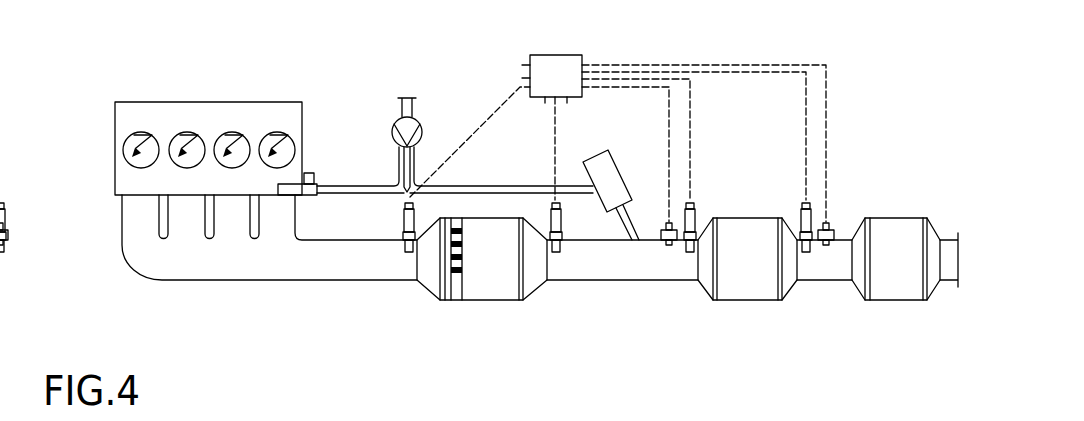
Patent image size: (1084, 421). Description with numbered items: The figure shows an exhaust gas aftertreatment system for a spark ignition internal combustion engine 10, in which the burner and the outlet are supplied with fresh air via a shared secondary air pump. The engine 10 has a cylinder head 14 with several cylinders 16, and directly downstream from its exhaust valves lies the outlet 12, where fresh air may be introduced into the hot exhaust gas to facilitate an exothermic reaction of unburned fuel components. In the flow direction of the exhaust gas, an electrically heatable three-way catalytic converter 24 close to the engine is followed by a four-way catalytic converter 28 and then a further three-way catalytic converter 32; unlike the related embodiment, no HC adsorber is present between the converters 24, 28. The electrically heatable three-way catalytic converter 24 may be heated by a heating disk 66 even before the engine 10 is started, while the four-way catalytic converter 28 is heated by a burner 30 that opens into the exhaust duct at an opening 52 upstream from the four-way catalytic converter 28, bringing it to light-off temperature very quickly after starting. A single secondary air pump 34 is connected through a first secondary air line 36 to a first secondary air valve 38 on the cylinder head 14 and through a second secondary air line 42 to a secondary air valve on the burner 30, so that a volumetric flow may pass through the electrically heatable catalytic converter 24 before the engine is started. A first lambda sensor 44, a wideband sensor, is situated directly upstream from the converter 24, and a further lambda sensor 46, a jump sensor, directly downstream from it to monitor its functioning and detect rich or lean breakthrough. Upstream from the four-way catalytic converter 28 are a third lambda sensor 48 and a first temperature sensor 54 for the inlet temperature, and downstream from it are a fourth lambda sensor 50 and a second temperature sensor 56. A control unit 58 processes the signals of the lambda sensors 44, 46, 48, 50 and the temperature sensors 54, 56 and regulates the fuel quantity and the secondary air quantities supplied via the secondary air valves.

The internal combustion engine 10 is at (182, 118).
The outlet 12 is at (151, 253).
The cylinder head 14 is at (125, 180).
The cylinders 16 is at (141, 122).
The electrically heatable three-way catalytic converter 24 is at (482, 284).
The four-way catalytic converter 28 is at (750, 289).
The burner 30 is at (615, 225).
The further three-way catalytic converter 32 is at (896, 289).
The secondary air pump 34 is at (395, 127).
The first secondary air line 36 is at (360, 189).
The first secondary air valve 38 is at (309, 197).
The second secondary air line 42 is at (504, 189).
The first lambda sensor 44 is at (405, 212).
The further lambda sensor 46 is at (560, 213).
The third lambda sensor 48 is at (694, 211).
The fourth lambda sensor 50 is at (801, 212).
The opening 52 is at (632, 228).
The first temperature sensor 54 is at (668, 226).
The second temperature sensor 56 is at (831, 229).
The control unit 58 is at (559, 55).
The heating disk 66 is at (457, 288).